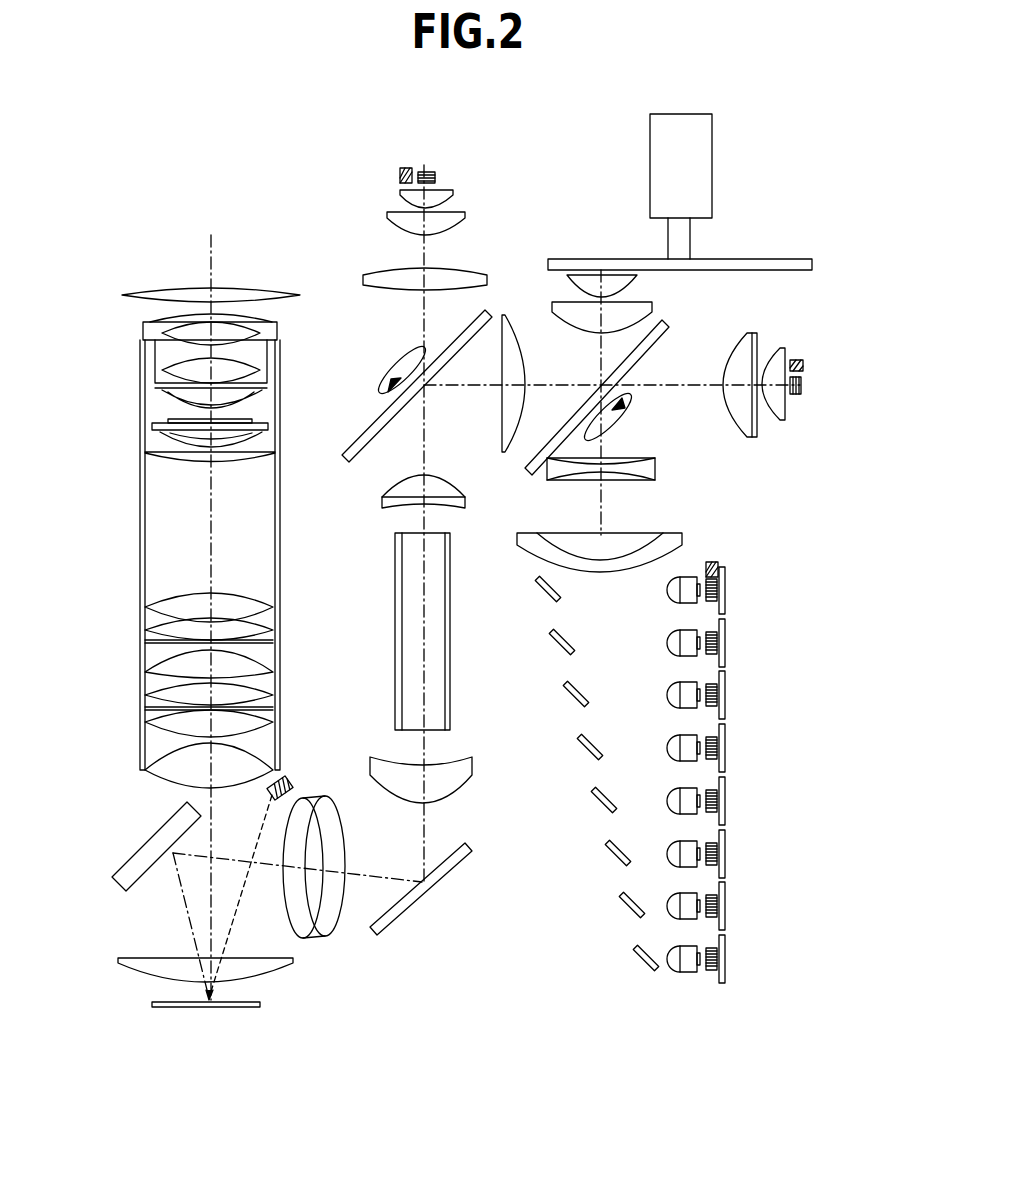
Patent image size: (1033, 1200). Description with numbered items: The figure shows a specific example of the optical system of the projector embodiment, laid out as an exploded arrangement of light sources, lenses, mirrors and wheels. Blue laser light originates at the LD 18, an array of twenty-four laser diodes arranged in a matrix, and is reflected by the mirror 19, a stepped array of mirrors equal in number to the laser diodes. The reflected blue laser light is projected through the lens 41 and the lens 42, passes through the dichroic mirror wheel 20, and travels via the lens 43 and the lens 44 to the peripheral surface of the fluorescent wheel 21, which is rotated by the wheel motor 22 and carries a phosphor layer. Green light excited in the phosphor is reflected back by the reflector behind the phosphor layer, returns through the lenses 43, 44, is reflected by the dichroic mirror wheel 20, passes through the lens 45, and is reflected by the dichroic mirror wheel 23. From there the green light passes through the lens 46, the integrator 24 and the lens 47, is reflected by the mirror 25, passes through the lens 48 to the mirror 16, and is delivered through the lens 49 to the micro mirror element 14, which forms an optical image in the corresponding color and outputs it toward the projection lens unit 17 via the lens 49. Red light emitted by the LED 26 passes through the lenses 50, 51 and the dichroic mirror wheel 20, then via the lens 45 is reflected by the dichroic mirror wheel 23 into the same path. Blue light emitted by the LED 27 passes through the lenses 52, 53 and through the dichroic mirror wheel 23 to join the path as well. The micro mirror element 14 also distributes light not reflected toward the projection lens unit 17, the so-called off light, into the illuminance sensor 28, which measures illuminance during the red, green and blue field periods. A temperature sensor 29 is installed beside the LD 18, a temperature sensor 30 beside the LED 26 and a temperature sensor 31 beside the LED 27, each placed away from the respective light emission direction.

The micro mirror element 14 is at (262, 1004).
The mirror 16 is at (130, 858).
The projection lens unit 17 is at (120, 303).
The LD 18 is at (725, 745).
The mirror 19 is at (527, 575).
The dichroic mirror wheel 20 is at (656, 340).
The fluorescent wheel 21 is at (775, 258).
The wheel motor 22 is at (713, 158).
The dichroic mirror wheel 23 is at (360, 437).
The integrator 24 is at (452, 550).
The mirror 25 is at (462, 866).
The LED 26 is at (802, 386).
The LED 27 is at (437, 175).
The illuminance sensor 28 is at (290, 776).
The temperature sensor 29 is at (724, 542).
The temperature sensor 30 is at (805, 365).
The temperature sensor 31 is at (398, 175).
The lens 41 is at (677, 531).
The lens 42 is at (657, 467).
The lens 43 is at (654, 300).
The lens 44 is at (565, 290).
The lens 45 is at (527, 345).
The lens 46 is at (445, 480).
The lens 47 is at (474, 757).
The lens 48 is at (346, 823).
The lens 49 is at (295, 960).
The lens 50 is at (782, 346).
The lens 51 is at (752, 332).
The lens 52 is at (467, 212).
The lens 53 is at (478, 273).